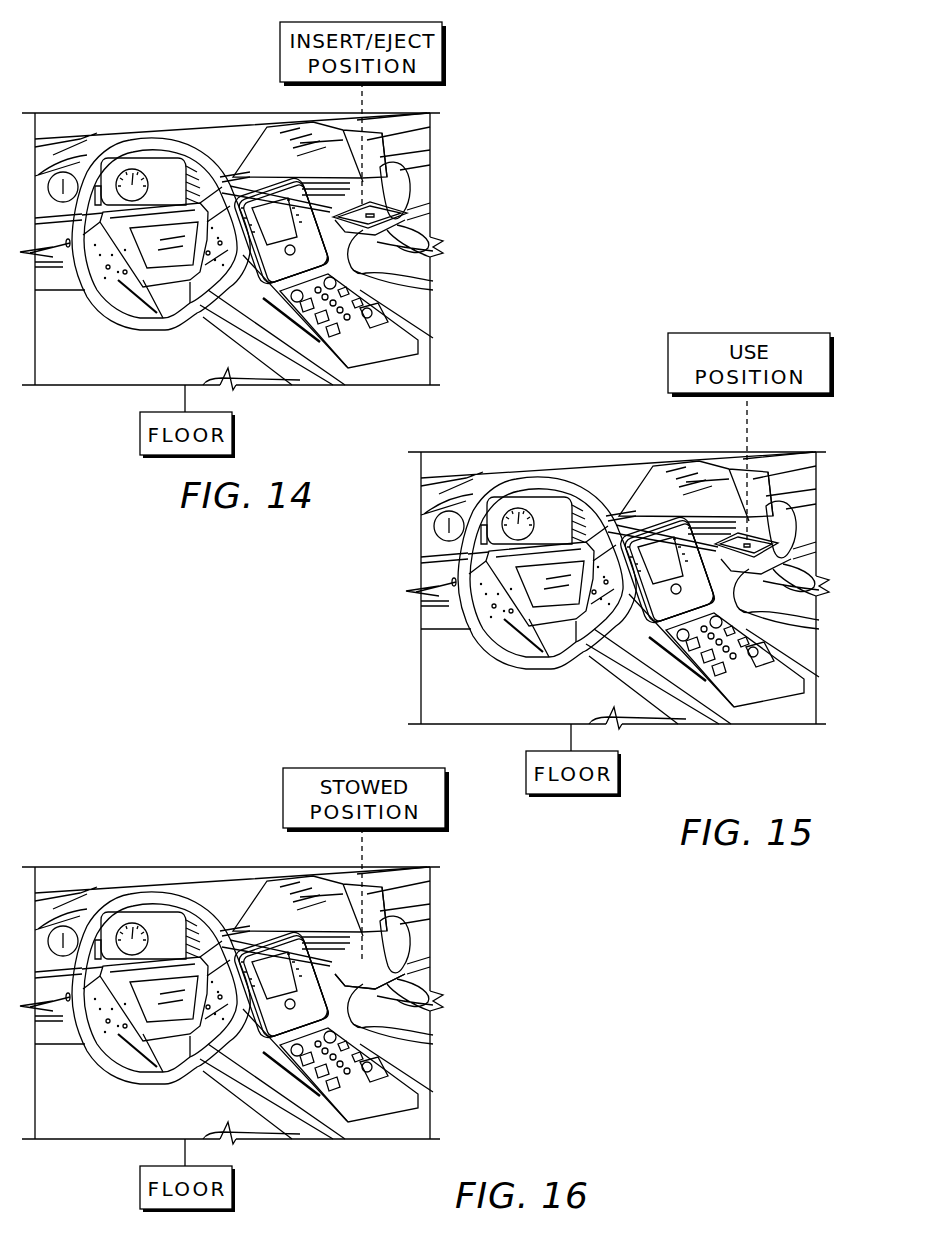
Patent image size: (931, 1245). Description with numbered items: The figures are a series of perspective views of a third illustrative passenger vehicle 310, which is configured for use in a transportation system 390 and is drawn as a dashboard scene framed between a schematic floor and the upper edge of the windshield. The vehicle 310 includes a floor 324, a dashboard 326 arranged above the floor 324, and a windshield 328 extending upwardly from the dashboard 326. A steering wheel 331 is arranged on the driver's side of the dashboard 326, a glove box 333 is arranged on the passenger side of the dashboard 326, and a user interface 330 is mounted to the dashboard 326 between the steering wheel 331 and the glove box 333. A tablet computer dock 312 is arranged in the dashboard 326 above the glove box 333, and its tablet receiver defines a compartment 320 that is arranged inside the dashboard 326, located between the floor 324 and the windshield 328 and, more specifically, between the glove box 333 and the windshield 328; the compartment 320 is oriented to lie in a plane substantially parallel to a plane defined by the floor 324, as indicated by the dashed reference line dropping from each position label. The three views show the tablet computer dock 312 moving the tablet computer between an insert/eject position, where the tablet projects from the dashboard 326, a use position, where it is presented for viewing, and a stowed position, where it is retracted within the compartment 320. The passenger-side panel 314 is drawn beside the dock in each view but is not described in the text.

In FIG. 14, the vehicle 310 is at (440, 124).
In FIG. 15, the vehicle 310 is at (838, 480).
In FIG. 16, the vehicle 310 is at (444, 883).
In FIG. 14, the tablet computer dock 312 is at (370, 186).
In FIG. 15, the tablet computer dock 312 is at (755, 528).
In FIG. 16, the tablet computer dock 312 is at (378, 947).
In FIG. 14, the passenger side panel 314 is at (377, 240).
In FIG. 15, the passenger side panel 314 is at (767, 562).
In FIG. 16, the passenger side panel 314 is at (381, 975).
In FIG. 14, the compartment 320 is at (350, 198).
In FIG. 15, the compartment 320 is at (718, 548).
In FIG. 16, the compartment 320 is at (350, 953).
In FIG. 14, the floor 324 is at (140, 434).
In FIG. 15, the floor 324 is at (527, 773).
In FIG. 16, the floor 324 is at (140, 1188).
In FIG. 14, the dashboard 326 is at (51, 148).
In FIG. 15, the dashboard 326 is at (437, 478).
In FIG. 16, the dashboard 326 is at (46, 898).
In FIG. 14, the windshield 328 is at (86, 116).
In FIG. 15, the windshield 328 is at (476, 462).
In FIG. 16, the windshield 328 is at (76, 867).
In FIG. 14, the user interface 330 is at (270, 196).
In FIG. 15, the user interface 330 is at (653, 536).
In FIG. 16, the user interface 330 is at (270, 952).
In FIG. 14, the steering wheel 331 is at (181, 146).
In FIG. 15, the steering wheel 331 is at (559, 484).
In FIG. 16, the steering wheel 331 is at (158, 988).
In FIG. 14, the glove box 333 is at (400, 202).
In FIG. 15, the glove box 333 is at (783, 529).
In FIG. 16, the glove box 333 is at (370, 981).
In FIG. 14, the transportation system 390 is at (83, 102).
In FIG. 15, the transportation system 390 is at (449, 440).
In FIG. 16, the transportation system 390 is at (152, 838).